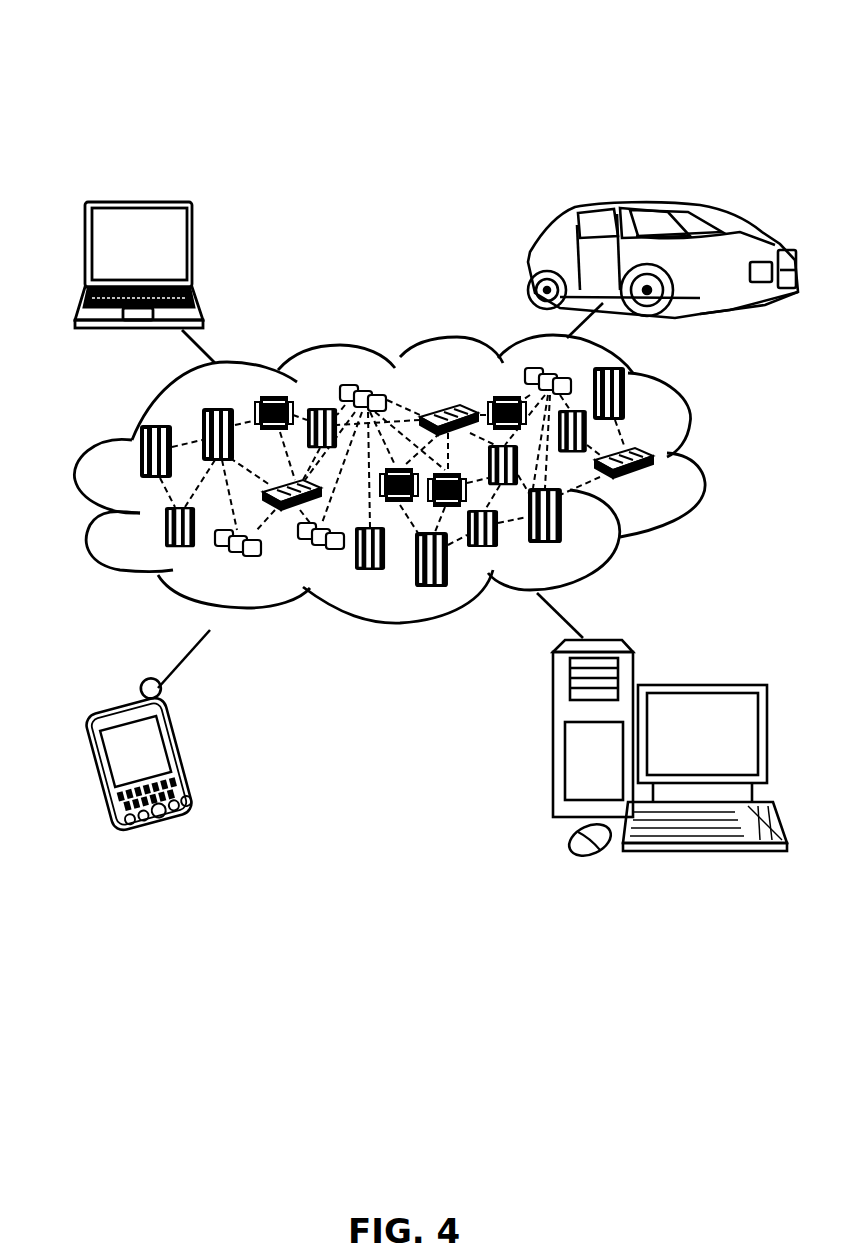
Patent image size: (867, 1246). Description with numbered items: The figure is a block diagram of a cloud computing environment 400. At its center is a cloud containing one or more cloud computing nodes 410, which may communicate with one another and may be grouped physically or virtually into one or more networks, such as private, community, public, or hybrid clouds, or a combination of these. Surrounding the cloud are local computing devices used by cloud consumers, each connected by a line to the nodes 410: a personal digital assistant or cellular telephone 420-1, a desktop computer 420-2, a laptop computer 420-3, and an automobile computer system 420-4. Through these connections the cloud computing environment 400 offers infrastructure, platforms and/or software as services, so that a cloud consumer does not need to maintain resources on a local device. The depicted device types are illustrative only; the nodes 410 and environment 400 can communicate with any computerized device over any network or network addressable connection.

The cloud computing environment 400 is at (328, 56).
The cloud computing nodes 410 is at (664, 485).
The personal digital assistant or cellular telephone 420-1 is at (190, 757).
The desktop computer 420-2 is at (702, 682).
The laptop computer 420-3 is at (193, 250).
The automobile computer system 420-4 is at (528, 258).